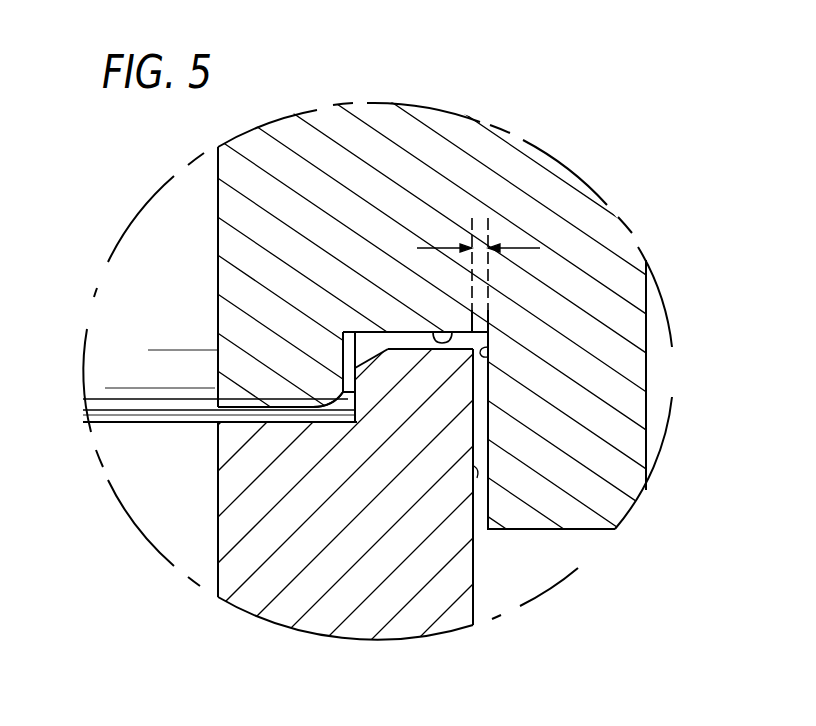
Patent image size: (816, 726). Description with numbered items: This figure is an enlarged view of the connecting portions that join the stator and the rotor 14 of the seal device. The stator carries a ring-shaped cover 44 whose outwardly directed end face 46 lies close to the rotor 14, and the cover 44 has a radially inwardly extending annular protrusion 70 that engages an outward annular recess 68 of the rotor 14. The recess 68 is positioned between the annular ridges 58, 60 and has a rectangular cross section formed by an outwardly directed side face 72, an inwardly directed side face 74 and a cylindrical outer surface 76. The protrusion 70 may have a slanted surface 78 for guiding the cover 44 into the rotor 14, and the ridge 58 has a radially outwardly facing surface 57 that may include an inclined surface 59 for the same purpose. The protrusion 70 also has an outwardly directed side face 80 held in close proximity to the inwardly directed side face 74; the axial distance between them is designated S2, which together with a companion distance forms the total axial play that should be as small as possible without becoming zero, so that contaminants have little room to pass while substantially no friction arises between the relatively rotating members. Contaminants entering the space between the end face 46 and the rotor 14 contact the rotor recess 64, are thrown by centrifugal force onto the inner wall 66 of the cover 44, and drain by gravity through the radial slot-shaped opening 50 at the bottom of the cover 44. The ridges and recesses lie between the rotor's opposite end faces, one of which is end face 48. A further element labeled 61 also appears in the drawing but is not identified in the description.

The rotor 14 is at (537, 200).
The ring-shaped cover 44 is at (360, 625).
The outwardly directed end face 46 is at (476, 572).
The end face of the rotor 48 is at (632, 400).
The radial slot-shaped opening 50 is at (152, 515).
The radially outwardly facing surface 57 is at (245, 407).
The annular ridge 58 is at (235, 231).
The inclined surface 59 is at (340, 395).
The annular ridge 60 is at (615, 368).
The bottom edge of right body 61 is at (592, 530).
The annular recess 64 is at (175, 178).
The inner wall of the cover 66 is at (92, 427).
The outward annular recess 68 is at (345, 356).
The radially inwardly extending annular protrusion 70 is at (440, 585).
The outwardly directed side face 72 is at (343, 377).
The inwardly directed side face 74 is at (490, 352).
The cylindrical outer surface 76 is at (448, 345).
The slanted surface 78 is at (367, 340).
The outwardly directed side face 80 is at (474, 466).
The axial distance S2 is at (432, 248).